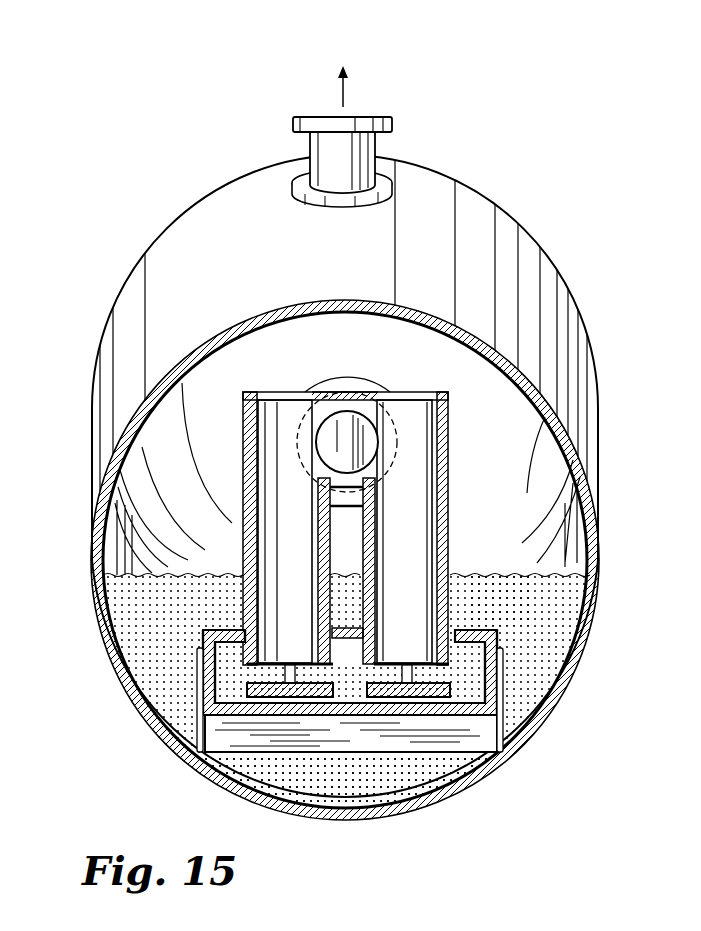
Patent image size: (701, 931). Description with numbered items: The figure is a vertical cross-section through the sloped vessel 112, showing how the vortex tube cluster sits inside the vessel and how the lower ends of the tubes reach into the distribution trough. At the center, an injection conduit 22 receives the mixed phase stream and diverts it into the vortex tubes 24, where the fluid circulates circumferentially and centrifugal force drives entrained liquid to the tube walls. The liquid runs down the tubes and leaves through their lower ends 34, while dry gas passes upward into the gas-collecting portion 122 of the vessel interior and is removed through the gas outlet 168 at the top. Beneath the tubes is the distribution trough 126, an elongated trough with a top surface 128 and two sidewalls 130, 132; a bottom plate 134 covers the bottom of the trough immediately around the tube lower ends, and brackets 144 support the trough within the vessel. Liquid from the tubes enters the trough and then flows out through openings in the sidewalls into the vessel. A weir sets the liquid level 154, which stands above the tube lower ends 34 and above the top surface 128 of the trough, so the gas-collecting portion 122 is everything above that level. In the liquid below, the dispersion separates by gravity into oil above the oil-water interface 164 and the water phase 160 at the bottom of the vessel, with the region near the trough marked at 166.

The vessel 112 is at (379, 490).
The gas outlet 168 is at (393, 128).
The vortex tubes 24 is at (243, 467).
The gas-collecting portion 122 is at (323, 366).
The injection conduit 22 is at (347, 390).
The liquid level 154 is at (497, 572).
The oil-water interface 164 is at (575, 672).
The liquid region 166 is at (523, 612).
The distribution trough 126 is at (508, 629).
The top surface 128 is at (220, 625).
The sidewall 132 is at (503, 653).
The sidewall 130 is at (207, 692).
The lower ends 34 is at (262, 672).
The bottom plate 134 is at (357, 717).
The brackets 144 is at (197, 727).
The water phase 160 is at (346, 788).